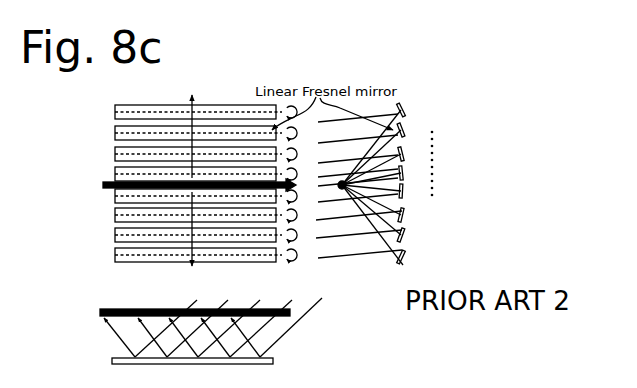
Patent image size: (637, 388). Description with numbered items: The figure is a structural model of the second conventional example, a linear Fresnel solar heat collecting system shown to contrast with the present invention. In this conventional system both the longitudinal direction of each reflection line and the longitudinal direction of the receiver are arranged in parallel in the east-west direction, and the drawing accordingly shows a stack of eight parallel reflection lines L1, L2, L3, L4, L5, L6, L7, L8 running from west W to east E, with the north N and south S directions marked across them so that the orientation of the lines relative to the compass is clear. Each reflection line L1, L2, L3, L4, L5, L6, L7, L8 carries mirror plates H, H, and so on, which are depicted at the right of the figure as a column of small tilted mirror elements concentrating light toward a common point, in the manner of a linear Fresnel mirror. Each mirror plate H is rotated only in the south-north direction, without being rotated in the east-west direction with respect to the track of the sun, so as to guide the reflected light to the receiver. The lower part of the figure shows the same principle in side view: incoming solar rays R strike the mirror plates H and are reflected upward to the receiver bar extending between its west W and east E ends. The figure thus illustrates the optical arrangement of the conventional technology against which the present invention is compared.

The reflection line L1 is at (114, 112).
The reflection line L2 is at (114, 133).
The reflection line L3 is at (114, 154).
The reflection line L4 is at (114, 174).
The reflection line L5 is at (114, 196).
The reflection line L6 is at (114, 215).
The reflection line L7 is at (114, 235).
The reflection line L8 is at (114, 255).
The incident solar ray R is at (121, 180).
The west end / receiver bar W is at (191, 249).
The east end E is at (300, 249).
The north direction N is at (192, 128).
The south direction S is at (192, 237).
The mirror plate H is at (403, 214).